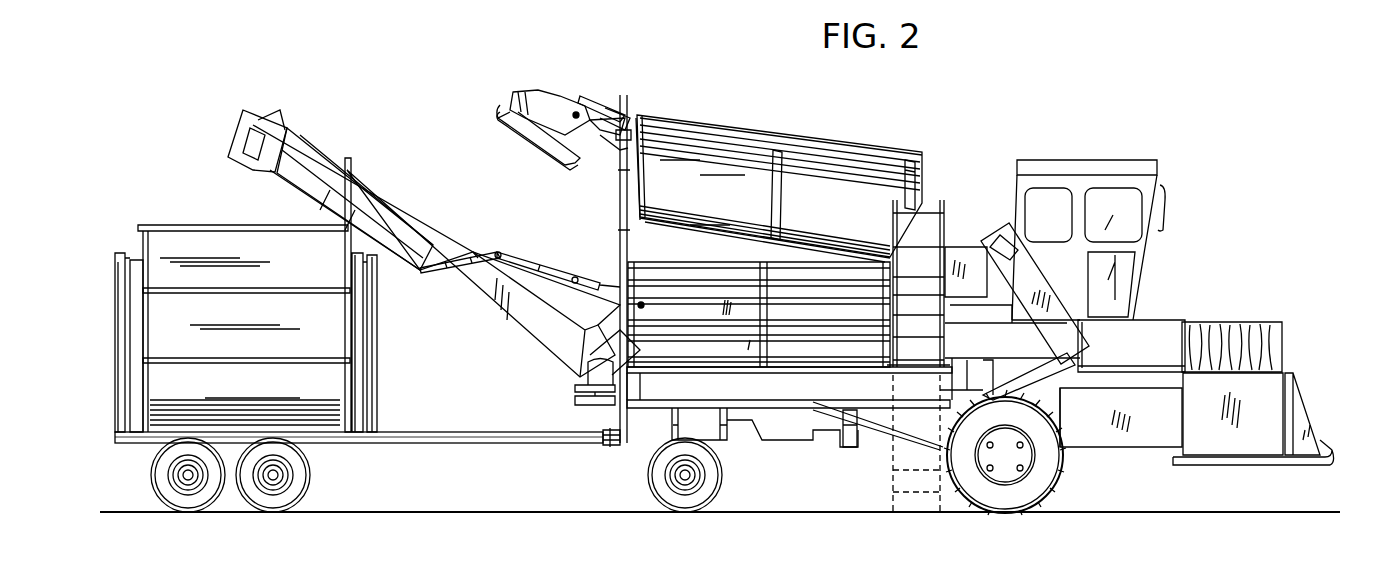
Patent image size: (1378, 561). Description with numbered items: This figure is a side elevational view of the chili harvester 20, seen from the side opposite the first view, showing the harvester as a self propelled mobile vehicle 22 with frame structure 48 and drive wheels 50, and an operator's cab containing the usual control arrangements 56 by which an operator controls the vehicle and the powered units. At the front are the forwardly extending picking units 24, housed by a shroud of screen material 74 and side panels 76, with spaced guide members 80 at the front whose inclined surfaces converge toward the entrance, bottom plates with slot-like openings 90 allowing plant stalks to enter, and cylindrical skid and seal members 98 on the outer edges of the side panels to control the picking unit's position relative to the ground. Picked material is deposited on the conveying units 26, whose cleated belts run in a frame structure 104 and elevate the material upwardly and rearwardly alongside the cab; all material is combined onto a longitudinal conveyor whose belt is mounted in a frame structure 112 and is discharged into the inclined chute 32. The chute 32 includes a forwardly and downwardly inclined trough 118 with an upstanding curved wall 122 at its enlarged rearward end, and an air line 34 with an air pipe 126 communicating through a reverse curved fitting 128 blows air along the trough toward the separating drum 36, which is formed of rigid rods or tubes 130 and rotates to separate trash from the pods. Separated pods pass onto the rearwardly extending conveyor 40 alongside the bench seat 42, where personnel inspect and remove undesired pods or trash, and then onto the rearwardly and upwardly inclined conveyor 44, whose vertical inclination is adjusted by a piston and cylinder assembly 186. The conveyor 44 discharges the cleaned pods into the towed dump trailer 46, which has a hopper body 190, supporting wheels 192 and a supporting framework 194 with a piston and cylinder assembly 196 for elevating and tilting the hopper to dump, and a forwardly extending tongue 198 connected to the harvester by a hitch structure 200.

The chili harvester 20 is at (1033, 263).
The self propelled mobile vehicle 22 is at (790, 445).
The picking units 24 is at (1259, 375).
The conveying units 26 is at (1050, 290).
The inclined chute 32 is at (550, 118).
The air line 34 is at (485, 128).
The separating drum 36 is at (750, 138).
The rearwardly extending conveyor 40 is at (830, 305).
The bench seat 42 is at (693, 375).
The rearwardly and upwardly inclined conveyor 44 is at (505, 330).
The towed dump trailer 46 is at (188, 225).
The frame structure 48 is at (828, 432).
The drive wheels 50 is at (1062, 488).
The control arrangements 56 is at (1067, 160).
The screen material 74 is at (1220, 322).
The side panels 76 is at (1272, 380).
The guide members 80 is at (1310, 415).
The slot-like openings 90 is at (1318, 466).
The cylindrical skid and seal members 98 is at (1235, 466).
The frame structure 104 is at (1108, 350).
The frame structure 112 is at (605, 110).
The trough 118 is at (605, 178).
The upstanding curved wall 122 is at (523, 90).
The air pipe 126 is at (530, 150).
The reverse curved fitting 128 is at (500, 100).
The rods or tubes 130 is at (860, 158).
The piston and cylinder assembly 186 is at (558, 270).
The hopper body 190 is at (170, 398).
The supporting wheels 192 is at (303, 482).
The supporting framework 194 is at (372, 338).
The piston and cylinder assembly 196 is at (378, 373).
The tongue 198 is at (535, 443).
The hitch structure 200 is at (613, 447).